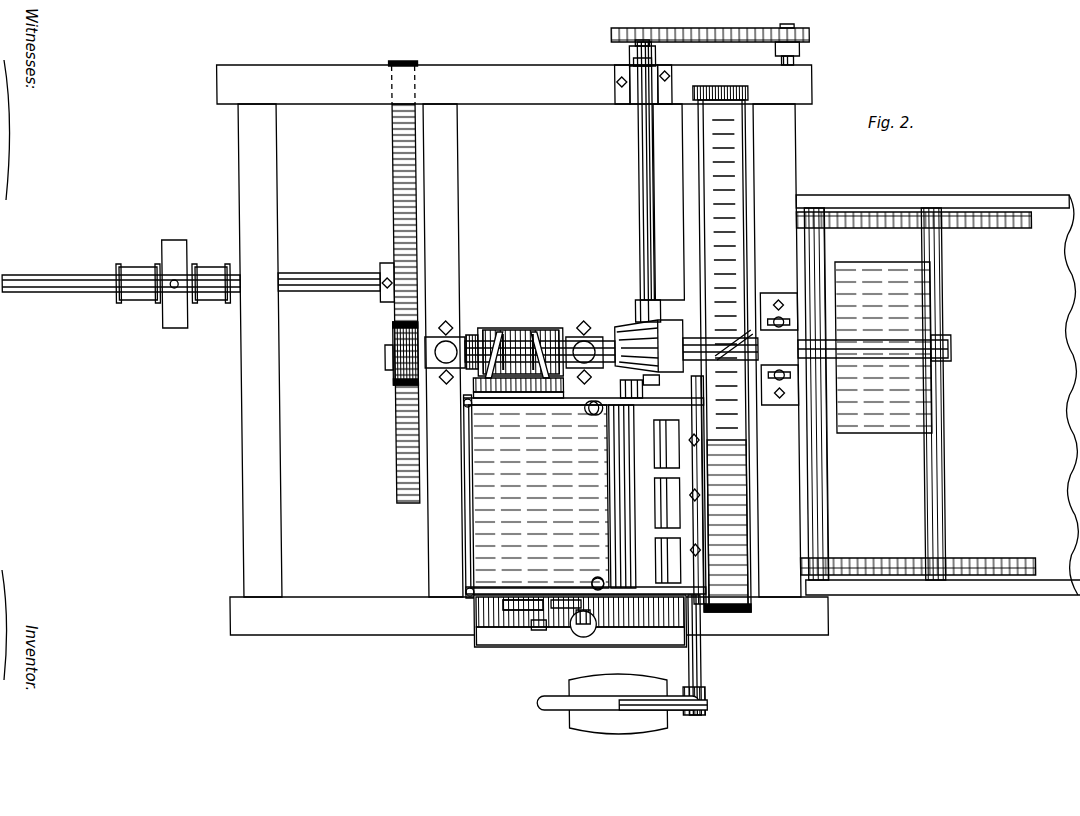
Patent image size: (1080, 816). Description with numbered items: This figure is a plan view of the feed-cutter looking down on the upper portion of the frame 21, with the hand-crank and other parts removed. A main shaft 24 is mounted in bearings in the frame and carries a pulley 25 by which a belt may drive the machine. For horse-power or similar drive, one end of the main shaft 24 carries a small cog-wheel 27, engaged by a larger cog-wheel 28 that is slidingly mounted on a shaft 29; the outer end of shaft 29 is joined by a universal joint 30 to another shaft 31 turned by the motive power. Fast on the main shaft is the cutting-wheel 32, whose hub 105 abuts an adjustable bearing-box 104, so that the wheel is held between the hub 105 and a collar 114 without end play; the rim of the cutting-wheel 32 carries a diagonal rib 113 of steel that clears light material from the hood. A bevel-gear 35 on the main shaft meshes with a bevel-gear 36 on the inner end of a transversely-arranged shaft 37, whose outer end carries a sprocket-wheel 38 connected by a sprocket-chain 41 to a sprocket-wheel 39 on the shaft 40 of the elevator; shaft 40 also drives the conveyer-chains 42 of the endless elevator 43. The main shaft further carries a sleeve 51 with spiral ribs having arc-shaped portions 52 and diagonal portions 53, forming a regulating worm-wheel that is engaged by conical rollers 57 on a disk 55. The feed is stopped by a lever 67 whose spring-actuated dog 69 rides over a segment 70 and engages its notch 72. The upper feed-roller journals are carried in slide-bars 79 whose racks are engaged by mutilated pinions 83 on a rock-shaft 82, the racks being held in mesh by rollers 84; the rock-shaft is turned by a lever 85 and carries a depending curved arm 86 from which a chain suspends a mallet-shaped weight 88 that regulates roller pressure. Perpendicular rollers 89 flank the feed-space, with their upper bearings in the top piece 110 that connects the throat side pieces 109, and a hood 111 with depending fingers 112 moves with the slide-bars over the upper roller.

The upper portion of the frame 21 is at (535, 104).
The main shaft 24 is at (836, 346).
The pulley 25 is at (920, 396).
The cog-wheel 27 is at (392, 367).
The cog-wheel 28 is at (392, 447).
The shaft 29 is at (312, 291).
The universal joint 30 is at (185, 328).
The shaft 31 is at (56, 288).
The cutting-wheel 32 is at (740, 486).
The bevel-gear 35 is at (608, 324).
The bevel-gear 36 is at (640, 320).
The transversely-arranged shaft 37 is at (640, 214).
The sprocket-wheel 38 is at (634, 30).
The sprocket-wheel 39 is at (792, 30).
The shaft of elevator 40 is at (796, 61).
The sprocket-chain 41 is at (716, 28).
The conveyer-chains 42 is at (980, 230).
The endless elevator 43 is at (938, 395).
The sleeve 51 is at (522, 332).
The parallel portions of ribs 52 is at (506, 326).
The diagonal portions of ribs 53 is at (490, 332).
The wheel or disk 55 is at (498, 392).
The conical rollers 57 is at (540, 398).
The lever 67 is at (556, 610).
The spring-actuated dog or pawl 69 is at (572, 632).
The segment 70 is at (592, 624).
The notch 72 is at (520, 630).
The slide-bars 79 is at (653, 495).
The rock-shaft 82 is at (696, 676).
The mutilated pinions 83 is at (700, 382).
The rollers 84 is at (625, 380).
The lever 85 is at (542, 704).
The curved arm 86 is at (636, 712).
The weight 88 is at (618, 713).
The perpendicular rollers 89 is at (582, 412).
The bearing-box 104 is at (777, 350).
The hub 105 is at (757, 326).
The side pieces 109 is at (460, 410).
The top piece 110 is at (480, 492).
The hood 111 is at (606, 482).
The depending fingers 112 is at (662, 462).
The diagonal rib 113 is at (731, 342).
The collar 114 is at (470, 308).